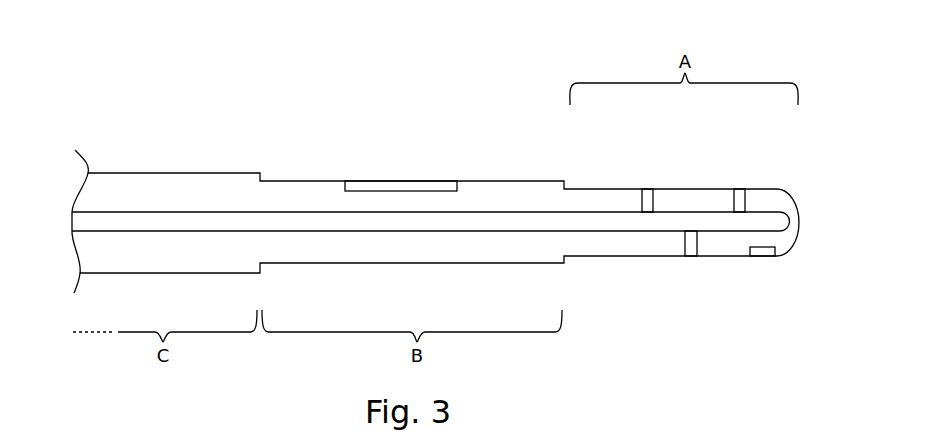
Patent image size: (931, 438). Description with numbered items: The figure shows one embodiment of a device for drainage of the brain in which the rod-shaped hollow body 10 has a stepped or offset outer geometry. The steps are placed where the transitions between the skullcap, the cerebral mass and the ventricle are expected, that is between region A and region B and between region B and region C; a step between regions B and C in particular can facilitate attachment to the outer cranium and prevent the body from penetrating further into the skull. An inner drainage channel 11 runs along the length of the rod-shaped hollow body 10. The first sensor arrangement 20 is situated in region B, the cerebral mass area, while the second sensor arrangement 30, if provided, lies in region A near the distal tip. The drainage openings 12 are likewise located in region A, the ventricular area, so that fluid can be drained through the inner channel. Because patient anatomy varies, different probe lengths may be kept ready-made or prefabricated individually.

The rod-shaped hollow body 10 is at (205, 178).
The inner drainage channel of the rod-shaped hollow body 11 is at (474, 219).
The first sensor arrangement 20 is at (370, 185).
The drainage opening arrangement 12 is at (648, 190).
The second sensor arrangement 30 is at (758, 256).